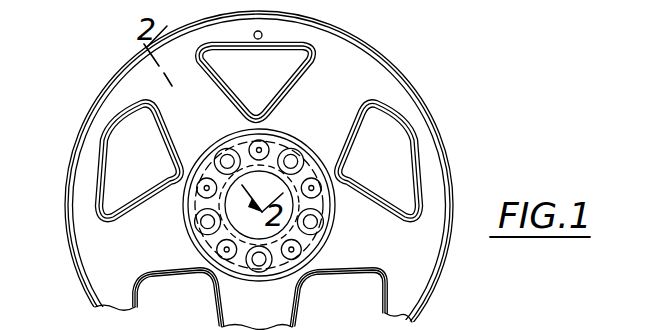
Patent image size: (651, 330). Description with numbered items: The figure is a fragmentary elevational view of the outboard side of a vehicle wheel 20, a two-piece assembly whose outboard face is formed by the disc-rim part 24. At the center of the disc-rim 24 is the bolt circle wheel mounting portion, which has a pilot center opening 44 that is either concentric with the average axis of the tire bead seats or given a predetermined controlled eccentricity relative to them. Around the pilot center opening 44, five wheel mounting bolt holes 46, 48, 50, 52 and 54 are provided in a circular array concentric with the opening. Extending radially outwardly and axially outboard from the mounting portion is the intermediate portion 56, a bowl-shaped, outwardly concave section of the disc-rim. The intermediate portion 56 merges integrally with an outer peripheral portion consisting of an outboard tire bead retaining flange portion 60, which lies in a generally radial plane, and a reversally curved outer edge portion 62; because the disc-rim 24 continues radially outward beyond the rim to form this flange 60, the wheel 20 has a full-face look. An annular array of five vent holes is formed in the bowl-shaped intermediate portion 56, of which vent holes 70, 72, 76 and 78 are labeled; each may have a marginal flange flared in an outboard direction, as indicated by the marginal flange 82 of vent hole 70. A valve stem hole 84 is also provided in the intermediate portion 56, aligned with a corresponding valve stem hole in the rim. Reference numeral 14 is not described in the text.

The window opening 14 is at (360, 292).
The wheel 20 is at (96, 61).
The disc-rim part 24 is at (66, 249).
The pilot center opening 44 is at (266, 243).
The wheel mounting bolt hole 46 is at (289, 162).
The wheel mounting bolt hole 48 is at (310, 222).
The wheel mounting bolt hole 50 is at (258, 266).
The wheel mounting bolt hole 52 is at (207, 222).
The wheel mounting bolt hole 54 is at (226, 162).
The intermediate portion 56 is at (95, 257).
The outboard tire bead retaining flange portion 60 is at (80, 157).
The reversally curved outer edge portion 62 is at (68, 220).
The vent hole 70 is at (292, 77).
The vent hole 72 is at (405, 186).
The vent hole 76 is at (160, 290).
The vent hole 78 is at (128, 133).
The marginal flange 82 is at (313, 56).
The valve stem hole 84 is at (263, 35).